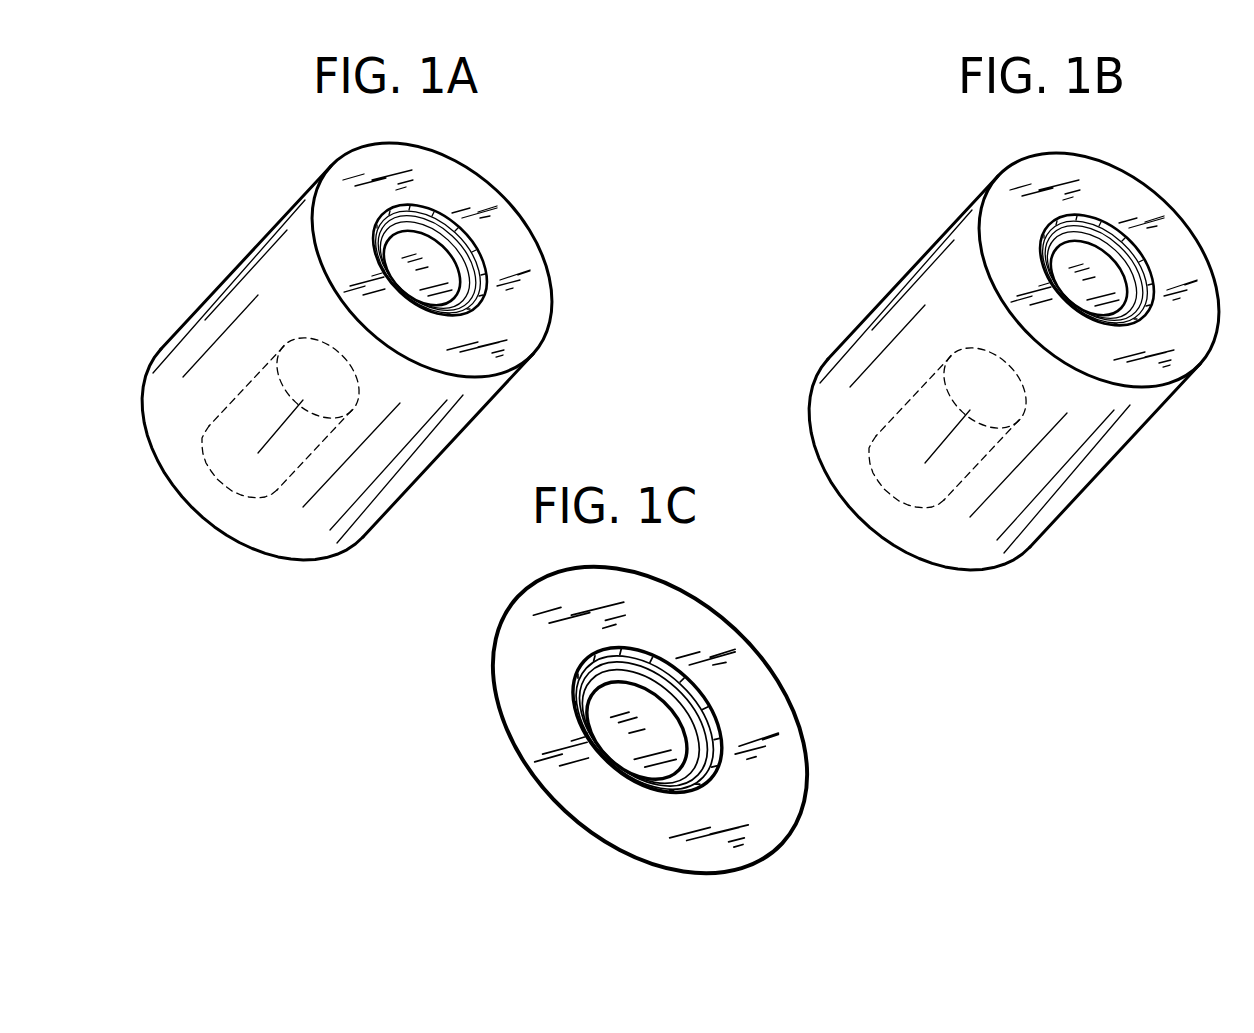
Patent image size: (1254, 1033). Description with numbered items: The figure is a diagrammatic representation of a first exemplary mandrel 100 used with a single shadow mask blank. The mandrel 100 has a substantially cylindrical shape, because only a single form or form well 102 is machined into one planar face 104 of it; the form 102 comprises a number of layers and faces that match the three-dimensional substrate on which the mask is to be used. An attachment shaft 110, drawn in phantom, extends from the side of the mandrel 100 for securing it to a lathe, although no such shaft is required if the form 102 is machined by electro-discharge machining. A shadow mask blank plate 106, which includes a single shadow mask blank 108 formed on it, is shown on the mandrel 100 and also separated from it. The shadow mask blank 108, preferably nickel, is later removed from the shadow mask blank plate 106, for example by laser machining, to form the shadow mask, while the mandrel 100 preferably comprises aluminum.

In FIG. 1A, the mandrel 100 is at (194, 308).
In FIG. 1B, the mandrel 100 is at (883, 296).
In FIG. 1A, the form well 102 is at (410, 273).
In FIG. 1A, the planar face 104 is at (437, 185).
In FIG. 1B, the shadow mask blank plate 106 is at (1138, 202).
In FIG. 1C, the shadow mask blank plate 106 is at (492, 642).
In FIG. 1C, the shadow mask blank 108 is at (676, 670).
In FIG. 1A, the attachment shaft 110 is at (287, 486).
In FIG. 1B, the attachment shaft 110 is at (954, 496).